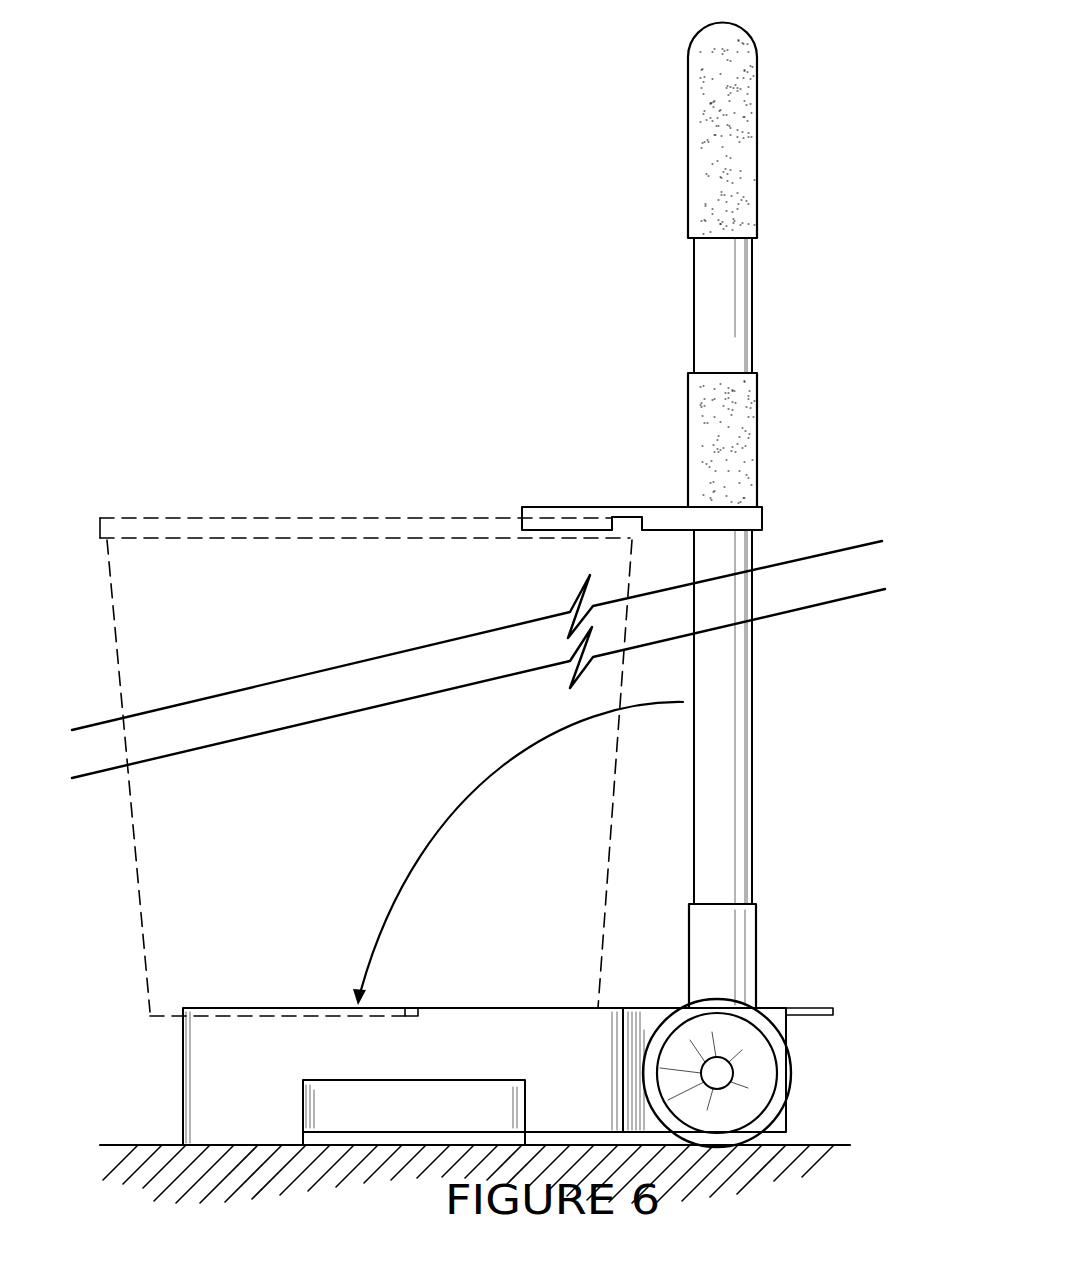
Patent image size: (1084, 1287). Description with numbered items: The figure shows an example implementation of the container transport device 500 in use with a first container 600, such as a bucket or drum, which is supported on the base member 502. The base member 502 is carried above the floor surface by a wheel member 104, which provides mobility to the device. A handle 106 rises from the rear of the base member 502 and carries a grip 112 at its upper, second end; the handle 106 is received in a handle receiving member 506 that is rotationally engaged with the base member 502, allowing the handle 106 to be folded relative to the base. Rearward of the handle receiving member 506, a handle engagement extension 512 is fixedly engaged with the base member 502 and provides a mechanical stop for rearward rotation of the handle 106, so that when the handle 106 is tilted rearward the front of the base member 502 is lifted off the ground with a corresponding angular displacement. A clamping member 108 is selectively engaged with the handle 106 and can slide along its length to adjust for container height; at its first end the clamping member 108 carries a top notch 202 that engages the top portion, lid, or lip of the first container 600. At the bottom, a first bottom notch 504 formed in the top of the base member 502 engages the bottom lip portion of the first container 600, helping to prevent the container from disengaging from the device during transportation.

The container transport device 500 is at (798, 82).
The grip 112 is at (752, 163).
The handle 106 is at (738, 311).
The clamping member 108 is at (586, 507).
The top notch 202 is at (636, 536).
The first container 600 is at (394, 609).
The first bottom notch 504 is at (421, 994).
The base member 502 is at (183, 1068).
The handle receiving member 506 is at (760, 918).
The handle engagement extension 512 is at (815, 1008).
The wheel member 104 is at (795, 1066).